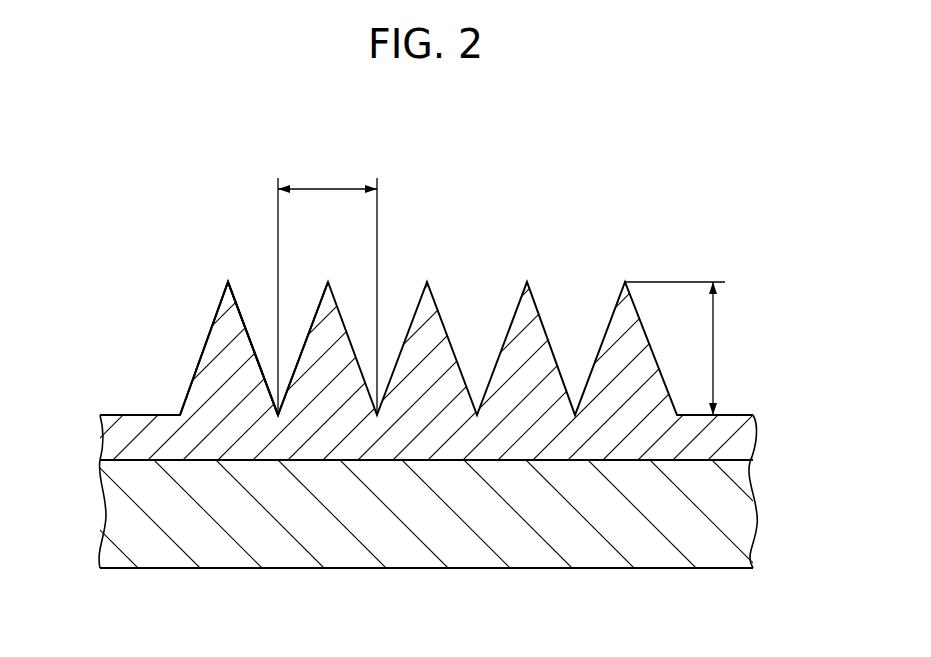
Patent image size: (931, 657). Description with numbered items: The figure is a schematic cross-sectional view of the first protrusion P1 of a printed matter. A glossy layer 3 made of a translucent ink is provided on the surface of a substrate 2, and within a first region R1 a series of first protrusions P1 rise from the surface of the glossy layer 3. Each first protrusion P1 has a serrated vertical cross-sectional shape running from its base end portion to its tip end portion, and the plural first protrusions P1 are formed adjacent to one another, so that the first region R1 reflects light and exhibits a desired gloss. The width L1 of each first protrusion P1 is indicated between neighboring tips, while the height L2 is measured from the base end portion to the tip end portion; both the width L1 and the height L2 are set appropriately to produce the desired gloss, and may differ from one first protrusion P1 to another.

The substrate 2 is at (645, 543).
The glossy layer 3 is at (97, 440).
The first protrusion P1 is at (225, 366).
The first region R1 is at (222, 440).
The width of first protrusion L1 is at (328, 189).
The height of first protrusion L2 is at (717, 350).